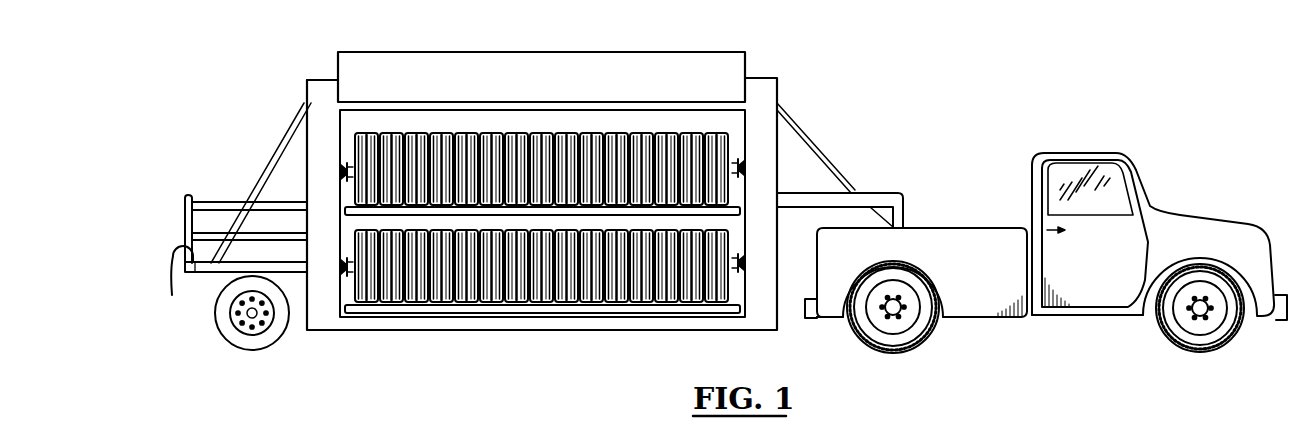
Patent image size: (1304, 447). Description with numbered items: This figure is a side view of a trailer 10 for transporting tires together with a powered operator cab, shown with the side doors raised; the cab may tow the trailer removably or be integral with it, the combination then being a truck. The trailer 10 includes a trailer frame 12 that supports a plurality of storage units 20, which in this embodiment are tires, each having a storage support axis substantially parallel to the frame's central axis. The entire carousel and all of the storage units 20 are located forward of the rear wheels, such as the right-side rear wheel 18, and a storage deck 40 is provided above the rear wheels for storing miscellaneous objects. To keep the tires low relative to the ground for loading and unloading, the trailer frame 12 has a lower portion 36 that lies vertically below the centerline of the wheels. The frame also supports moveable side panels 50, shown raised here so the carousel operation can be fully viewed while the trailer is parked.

The trailer 10 is at (787, 83).
The trailer frame 12 is at (320, 92).
The right-side rear wheel 18 is at (258, 349).
The storage units 20 is at (348, 188).
The lower portion of the trailer frame 36 is at (378, 324).
The storage deck 40 is at (175, 283).
The moveable side panels 50 is at (370, 72).